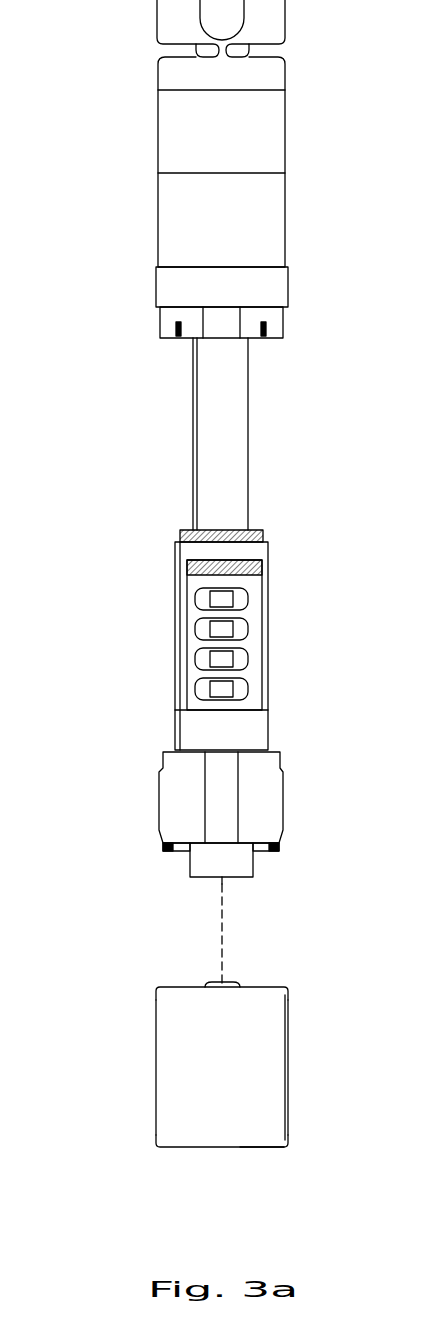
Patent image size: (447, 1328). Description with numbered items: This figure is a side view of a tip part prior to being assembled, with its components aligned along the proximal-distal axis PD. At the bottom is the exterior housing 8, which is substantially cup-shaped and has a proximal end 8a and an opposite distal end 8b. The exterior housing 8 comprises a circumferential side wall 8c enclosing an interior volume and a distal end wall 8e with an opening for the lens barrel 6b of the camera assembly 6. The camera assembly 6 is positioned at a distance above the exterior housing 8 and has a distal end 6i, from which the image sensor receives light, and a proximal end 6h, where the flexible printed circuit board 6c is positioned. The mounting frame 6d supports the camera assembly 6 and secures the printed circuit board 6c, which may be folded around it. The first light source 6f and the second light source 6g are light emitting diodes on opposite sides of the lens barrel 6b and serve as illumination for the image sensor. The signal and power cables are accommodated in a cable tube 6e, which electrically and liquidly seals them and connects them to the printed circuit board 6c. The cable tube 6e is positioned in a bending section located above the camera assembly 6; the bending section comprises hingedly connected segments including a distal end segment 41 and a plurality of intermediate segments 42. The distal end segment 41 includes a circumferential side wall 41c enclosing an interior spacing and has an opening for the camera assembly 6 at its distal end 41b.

The intermediate segment 42 is at (284, 22).
The distal end segment 41 is at (156, 181).
The circumferential side wall 41c is at (287, 260).
The distal end 41b is at (225, 434).
The camera assembly 6 is at (164, 703).
The cable tube 6e is at (191, 447).
The distal end 6i is at (283, 514).
The printed circuit board 6c is at (262, 693).
The mounting frame 6d is at (258, 740).
The first light source 6f is at (178, 850).
The second light source 6g is at (270, 852).
The lens barrel 6b is at (190, 872).
The proximal end 6h is at (249, 894).
The proximal-distal axis PD is at (218, 933).
The exterior housing 8 is at (154, 1055).
The proximal end 8a is at (273, 975).
The distal end 8b is at (271, 1169).
The circumferential side wall 8c is at (288, 1065).
The distal end wall 8e is at (207, 1150).